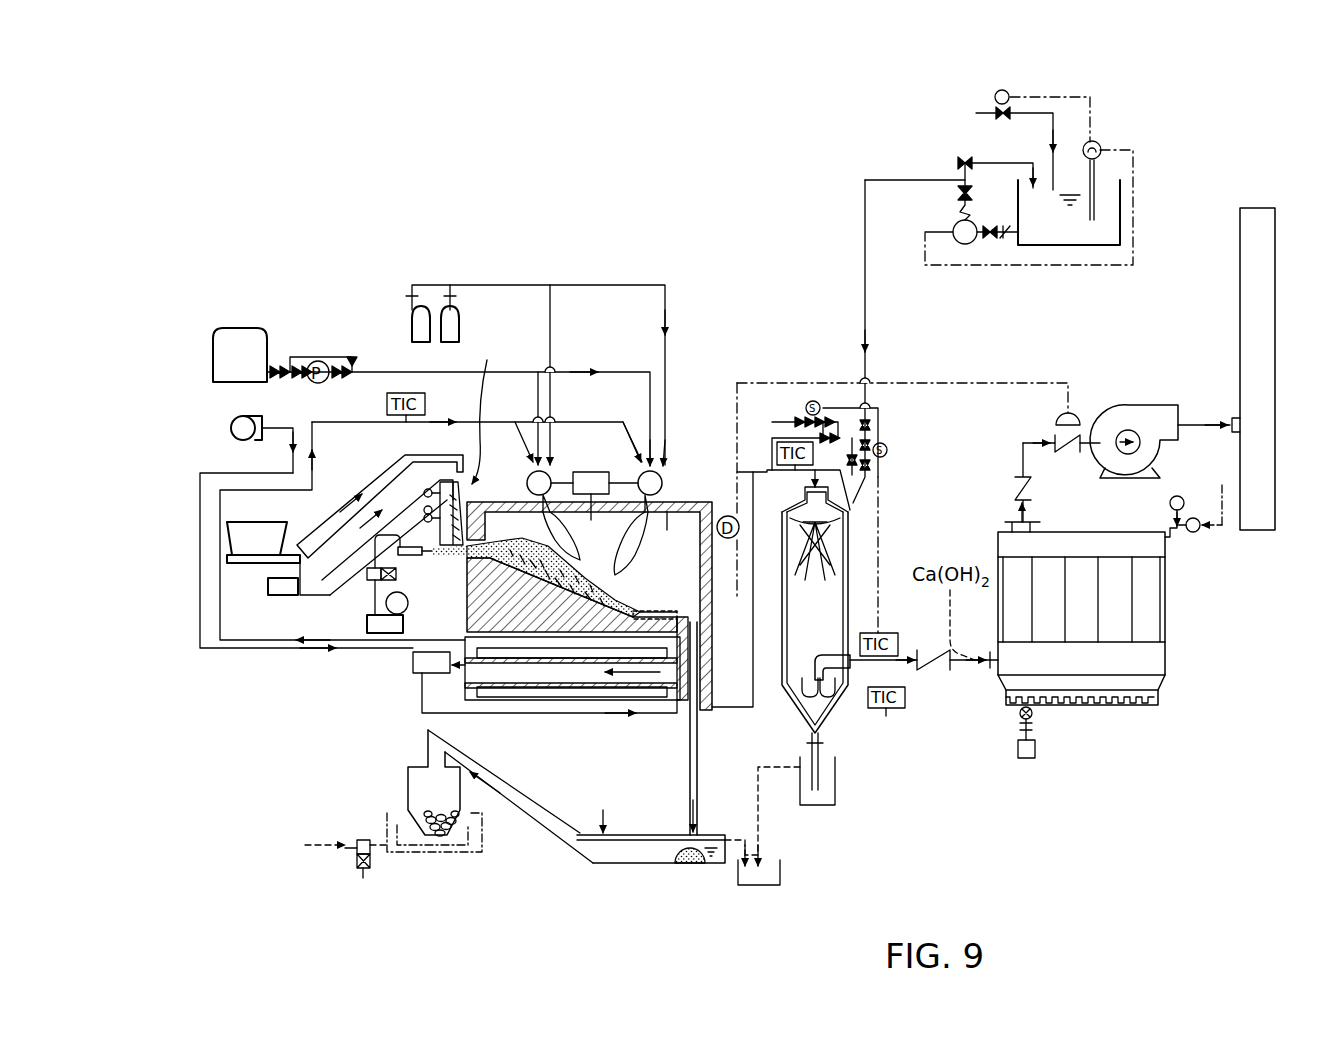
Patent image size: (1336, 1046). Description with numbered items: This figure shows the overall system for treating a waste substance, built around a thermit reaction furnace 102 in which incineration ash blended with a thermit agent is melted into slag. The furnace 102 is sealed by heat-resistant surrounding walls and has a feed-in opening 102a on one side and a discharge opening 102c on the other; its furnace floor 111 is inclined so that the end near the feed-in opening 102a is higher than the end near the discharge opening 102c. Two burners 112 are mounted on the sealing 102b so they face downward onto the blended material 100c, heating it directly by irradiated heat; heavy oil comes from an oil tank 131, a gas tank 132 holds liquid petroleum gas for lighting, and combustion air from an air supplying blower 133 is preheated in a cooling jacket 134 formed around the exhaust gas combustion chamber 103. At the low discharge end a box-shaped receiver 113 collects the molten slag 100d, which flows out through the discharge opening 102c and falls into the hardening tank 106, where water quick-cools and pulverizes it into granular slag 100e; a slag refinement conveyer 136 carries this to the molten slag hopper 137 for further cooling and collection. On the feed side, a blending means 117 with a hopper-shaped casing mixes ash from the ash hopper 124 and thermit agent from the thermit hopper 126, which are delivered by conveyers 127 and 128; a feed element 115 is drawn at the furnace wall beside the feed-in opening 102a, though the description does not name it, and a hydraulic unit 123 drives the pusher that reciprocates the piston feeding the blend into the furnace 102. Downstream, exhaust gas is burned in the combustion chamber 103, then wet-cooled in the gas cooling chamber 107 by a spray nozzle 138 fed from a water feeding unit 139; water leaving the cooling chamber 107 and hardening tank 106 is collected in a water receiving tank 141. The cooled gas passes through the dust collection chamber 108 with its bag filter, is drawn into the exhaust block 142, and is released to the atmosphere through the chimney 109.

The blended material 100c is at (623, 605).
The molten slag 100d is at (698, 617).
The granular slag 100e is at (690, 865).
The thermit reaction furnace 102 is at (698, 498).
The feed-in opening 102a is at (474, 575).
The sealing (surrounding wall) 102b is at (667, 515).
The discharge opening 102c is at (690, 622).
The exhaust gas combustion chamber 103 is at (556, 672).
The hardening tank 106 is at (612, 865).
The gas cooling chamber 107 is at (790, 697).
The dust collection chamber 108 is at (1165, 640).
The chimney 109 is at (1275, 320).
The furnace floor 111 is at (470, 603).
The burners 112 is at (528, 478).
The receiver 113 is at (642, 625).
The feeder 115 is at (432, 537).
The blending means 117 is at (491, 409).
The hydraulic unit 123 is at (372, 575).
The ash hopper 124 is at (232, 525).
The thermit hopper 126 is at (270, 578).
The conveyer 127 is at (382, 475).
The conveyer 128 is at (300, 582).
The oil tank 131 is at (247, 328).
The gas tank 132 is at (455, 300).
The air supplying blower 133 is at (232, 422).
The cooling jacket 134 is at (512, 700).
The slag refinement conveyer 136 is at (532, 826).
The molten slag hopper 137 is at (408, 768).
The spray nozzle 138 is at (840, 524).
The water feeding unit 139 is at (950, 162).
The water receiving tank 141 is at (768, 886).
The exhaust block 142 is at (1135, 405).